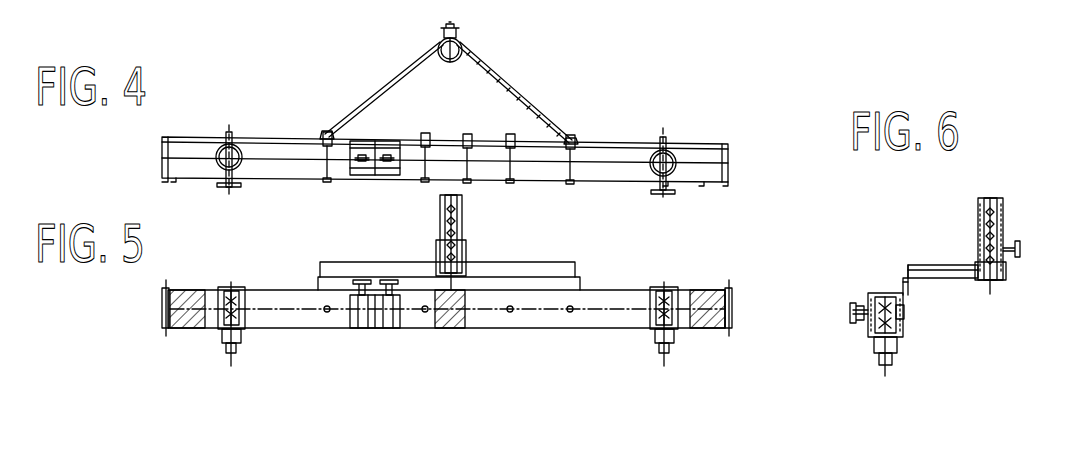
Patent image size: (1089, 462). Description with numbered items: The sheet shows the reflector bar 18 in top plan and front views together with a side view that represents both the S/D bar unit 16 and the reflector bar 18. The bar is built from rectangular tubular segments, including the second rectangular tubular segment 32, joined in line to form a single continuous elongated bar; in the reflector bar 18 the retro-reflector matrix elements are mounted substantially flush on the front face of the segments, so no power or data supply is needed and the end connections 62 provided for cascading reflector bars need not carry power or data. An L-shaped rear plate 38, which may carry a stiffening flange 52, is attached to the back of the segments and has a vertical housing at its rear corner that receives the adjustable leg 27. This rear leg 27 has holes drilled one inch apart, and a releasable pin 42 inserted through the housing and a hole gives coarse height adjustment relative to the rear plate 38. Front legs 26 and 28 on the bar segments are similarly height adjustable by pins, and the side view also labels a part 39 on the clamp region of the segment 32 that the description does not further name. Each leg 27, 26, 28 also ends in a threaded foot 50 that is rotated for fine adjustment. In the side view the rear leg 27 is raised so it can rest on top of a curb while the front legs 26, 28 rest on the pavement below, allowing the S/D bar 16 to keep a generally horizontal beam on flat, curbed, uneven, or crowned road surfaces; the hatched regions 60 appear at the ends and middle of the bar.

In FIG. 6, the S/D bar unit 16 is at (948, 328).
In FIG. 4, the reflector bar 18 is at (300, 123).
In FIG. 5, the reflector bar 18 is at (303, 270).
In FIG. 4, the leg 26 is at (227, 143).
In FIG. 5, the leg 26 is at (240, 338).
In FIG. 4, the adjustable leg 27 is at (468, 45).
In FIG. 5, the adjustable leg 27 is at (462, 214).
In FIG. 6, the adjustable leg 27 is at (1005, 205).
In FIG. 4, the leg 28 is at (668, 148).
In FIG. 5, the leg 28 is at (650, 345).
In FIG. 6, the second rectangular tubular segment 32 is at (880, 293).
In FIG. 4, the L-shaped rear plate 38 is at (513, 103).
In FIG. 6, the L-shaped rear plate 38 is at (905, 275).
In FIG. 6, the clamp jaw 39 is at (868, 295).
In FIG. 6, the releasable pin 42 is at (1020, 252).
In FIG. 6, the threaded foot 50 is at (879, 368).
In FIG. 6, the stiffening flange 52 is at (944, 265).
In FIG. 5, the hatched end block 60 is at (182, 330).
In FIG. 5, the end connection 62 is at (160, 307).